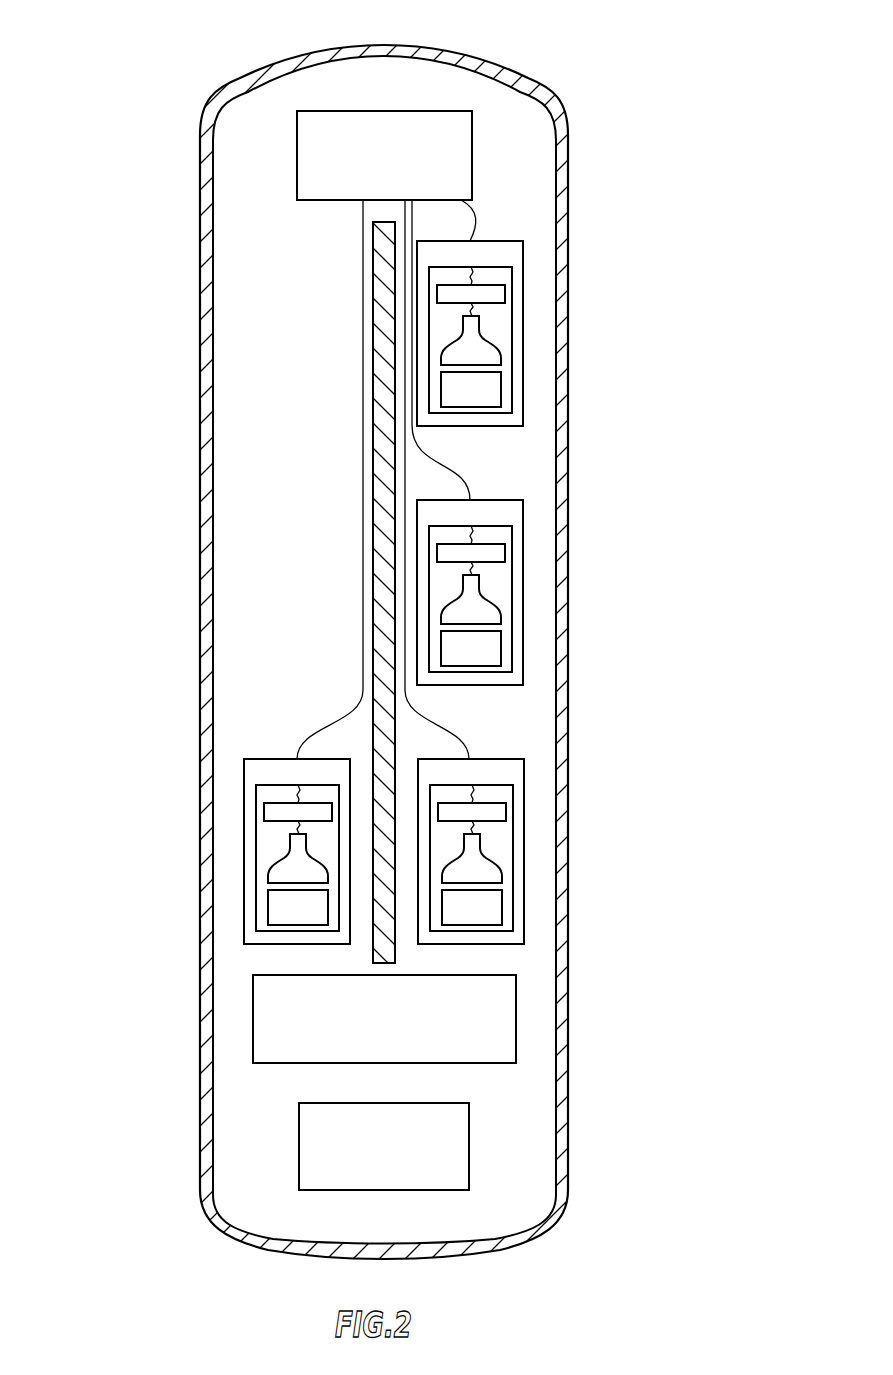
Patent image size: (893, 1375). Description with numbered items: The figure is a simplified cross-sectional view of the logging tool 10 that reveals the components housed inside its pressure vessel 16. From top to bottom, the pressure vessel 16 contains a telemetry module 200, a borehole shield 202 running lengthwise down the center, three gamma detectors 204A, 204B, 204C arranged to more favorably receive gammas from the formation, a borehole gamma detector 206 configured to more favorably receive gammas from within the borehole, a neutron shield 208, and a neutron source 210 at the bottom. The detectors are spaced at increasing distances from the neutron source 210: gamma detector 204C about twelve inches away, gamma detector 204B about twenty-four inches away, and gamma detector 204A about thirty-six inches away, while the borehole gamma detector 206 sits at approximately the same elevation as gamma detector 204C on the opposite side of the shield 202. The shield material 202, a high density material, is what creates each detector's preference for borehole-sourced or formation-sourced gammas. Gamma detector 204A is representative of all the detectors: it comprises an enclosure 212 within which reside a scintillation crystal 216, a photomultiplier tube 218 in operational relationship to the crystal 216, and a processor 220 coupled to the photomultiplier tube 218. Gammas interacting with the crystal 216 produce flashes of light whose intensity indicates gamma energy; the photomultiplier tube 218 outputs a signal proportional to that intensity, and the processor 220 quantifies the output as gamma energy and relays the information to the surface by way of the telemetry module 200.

The logging tool 10 is at (688, 88).
The pressure vessel 16 is at (569, 248).
The telemetry module 200 is at (315, 200).
The borehole shield 202 is at (373, 340).
The gamma detector 204A is at (462, 333).
The gamma detector 204B is at (525, 589).
The gamma detector 204C is at (525, 843).
The borehole gamma detector 206 is at (255, 843).
The neutron shield 208 is at (516, 1000).
The neutron source 210 is at (469, 1138).
The enclosure 212 is at (517, 300).
The crystal 216 is at (490, 392).
The photomultiplier tube 218 is at (501, 353).
The processor 220 is at (437, 288).